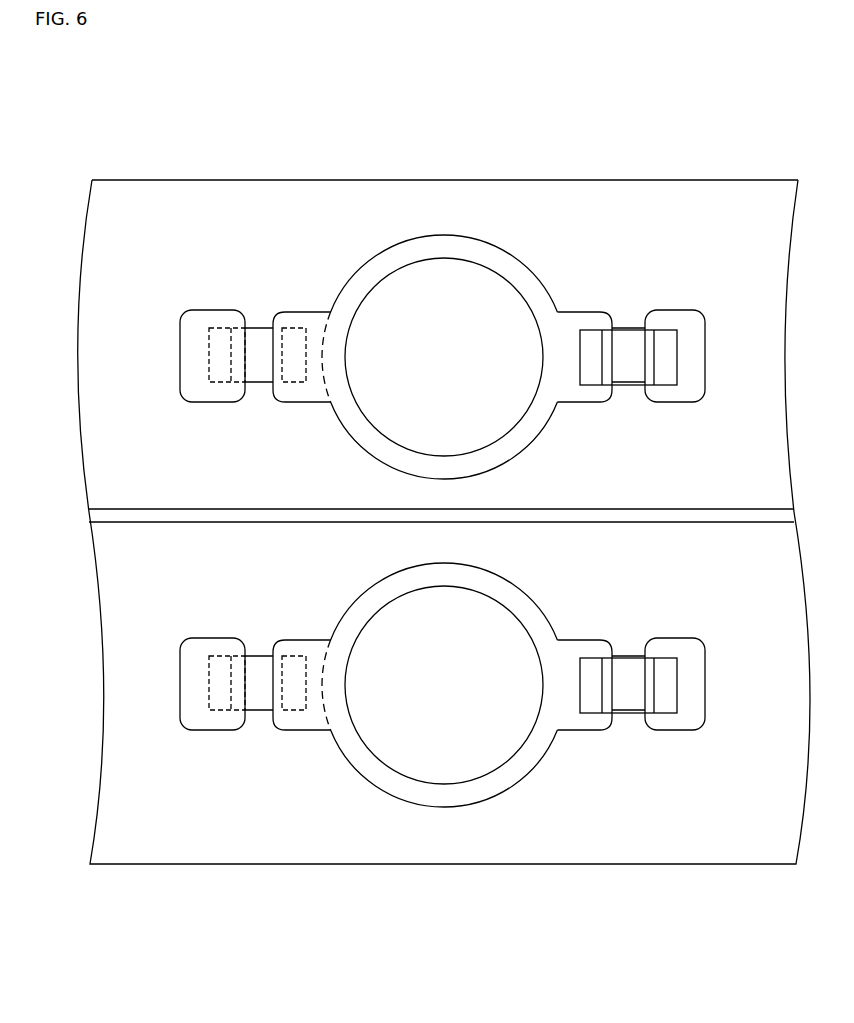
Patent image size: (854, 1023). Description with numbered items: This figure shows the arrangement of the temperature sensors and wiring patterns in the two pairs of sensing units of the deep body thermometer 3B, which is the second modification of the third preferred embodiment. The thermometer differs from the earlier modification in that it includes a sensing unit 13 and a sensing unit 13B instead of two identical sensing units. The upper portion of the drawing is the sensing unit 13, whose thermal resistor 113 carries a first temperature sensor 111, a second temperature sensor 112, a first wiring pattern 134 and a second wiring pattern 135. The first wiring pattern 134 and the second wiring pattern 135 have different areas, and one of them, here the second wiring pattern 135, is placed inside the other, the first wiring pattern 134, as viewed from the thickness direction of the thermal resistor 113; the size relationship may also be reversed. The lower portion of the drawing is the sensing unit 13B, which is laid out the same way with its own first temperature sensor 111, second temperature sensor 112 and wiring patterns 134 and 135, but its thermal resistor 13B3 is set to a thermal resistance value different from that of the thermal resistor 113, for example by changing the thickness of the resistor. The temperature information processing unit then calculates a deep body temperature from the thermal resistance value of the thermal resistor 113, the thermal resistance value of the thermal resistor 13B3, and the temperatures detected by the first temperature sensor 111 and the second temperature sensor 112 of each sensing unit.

The deep body thermometer 3B is at (740, 135).
The thermal resistor 113 is at (519, 195).
The sensing unit 13 is at (578, 257).
The thermal resistor 13B3 is at (518, 537).
The sensing unit 13B is at (578, 592).
The second temperature sensor 112 is at (209, 355).
The first temperature sensor 111 is at (677, 357).
The second wiring pattern 135 is at (380, 436).
The first wiring pattern 134 is at (540, 437).